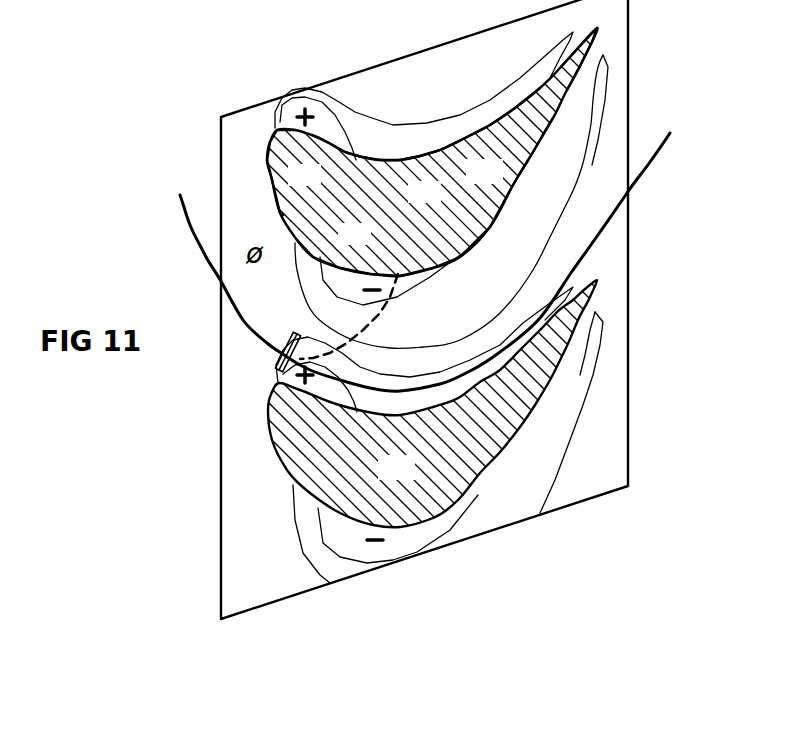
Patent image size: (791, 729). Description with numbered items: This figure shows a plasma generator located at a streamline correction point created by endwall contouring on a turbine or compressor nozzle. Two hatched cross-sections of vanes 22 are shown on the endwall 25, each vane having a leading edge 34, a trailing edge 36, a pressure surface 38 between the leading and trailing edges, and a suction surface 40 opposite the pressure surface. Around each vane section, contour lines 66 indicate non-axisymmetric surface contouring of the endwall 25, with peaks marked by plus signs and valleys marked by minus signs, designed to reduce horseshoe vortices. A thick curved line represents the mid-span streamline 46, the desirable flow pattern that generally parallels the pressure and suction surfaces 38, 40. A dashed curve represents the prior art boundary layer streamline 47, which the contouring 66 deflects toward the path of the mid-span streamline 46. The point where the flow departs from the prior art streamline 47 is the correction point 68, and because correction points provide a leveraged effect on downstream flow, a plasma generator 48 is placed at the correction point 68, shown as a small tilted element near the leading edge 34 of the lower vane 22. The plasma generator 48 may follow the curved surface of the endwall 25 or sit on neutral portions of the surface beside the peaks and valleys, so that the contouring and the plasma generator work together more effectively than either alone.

The vane 22 is at (502, 182).
The endwall 25 is at (234, 592).
The leading edge 34 is at (279, 135).
The trailing edge 36 is at (597, 29).
The pressure surface 38 is at (387, 163).
The suction surface 40 is at (387, 275).
The mid-span streamline 46 is at (186, 229).
The boundary layer streamline 47 is at (375, 322).
The plasma generator 48 is at (279, 366).
The contour lines 66 is at (547, 247).
The correction point 68 is at (292, 347).